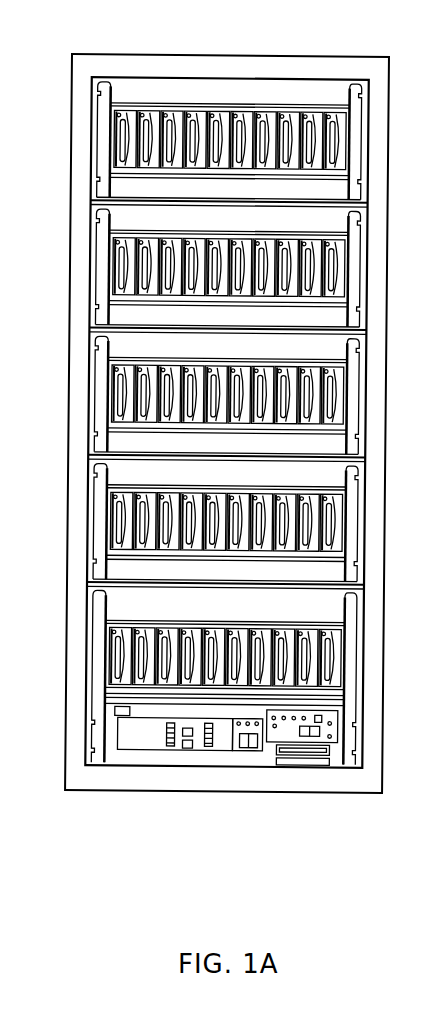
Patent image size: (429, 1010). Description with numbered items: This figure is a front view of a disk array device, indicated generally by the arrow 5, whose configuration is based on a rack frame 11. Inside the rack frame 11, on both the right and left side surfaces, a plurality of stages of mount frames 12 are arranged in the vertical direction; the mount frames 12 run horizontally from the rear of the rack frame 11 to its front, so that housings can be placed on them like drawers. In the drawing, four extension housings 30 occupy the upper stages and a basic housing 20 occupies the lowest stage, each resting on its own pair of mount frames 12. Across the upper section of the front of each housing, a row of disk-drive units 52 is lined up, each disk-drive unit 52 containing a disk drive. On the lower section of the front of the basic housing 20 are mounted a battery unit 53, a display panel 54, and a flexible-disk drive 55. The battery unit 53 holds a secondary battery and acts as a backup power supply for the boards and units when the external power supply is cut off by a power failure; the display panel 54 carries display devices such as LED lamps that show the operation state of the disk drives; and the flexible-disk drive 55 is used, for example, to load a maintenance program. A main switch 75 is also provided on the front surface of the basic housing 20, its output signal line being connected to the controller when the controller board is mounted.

The disk array system 5 is at (333, 803).
The rack frame 11 is at (242, 55).
The mount frames 12 is at (92, 196).
The basic housing 20 is at (100, 628).
The extension housing 30 is at (98, 121).
The disk-drive units 52 is at (338, 135).
The battery unit 53 is at (134, 731).
The display panel 54 is at (355, 724).
The flexible-disk drive 55 is at (355, 749).
The main switch 75 is at (121, 712).